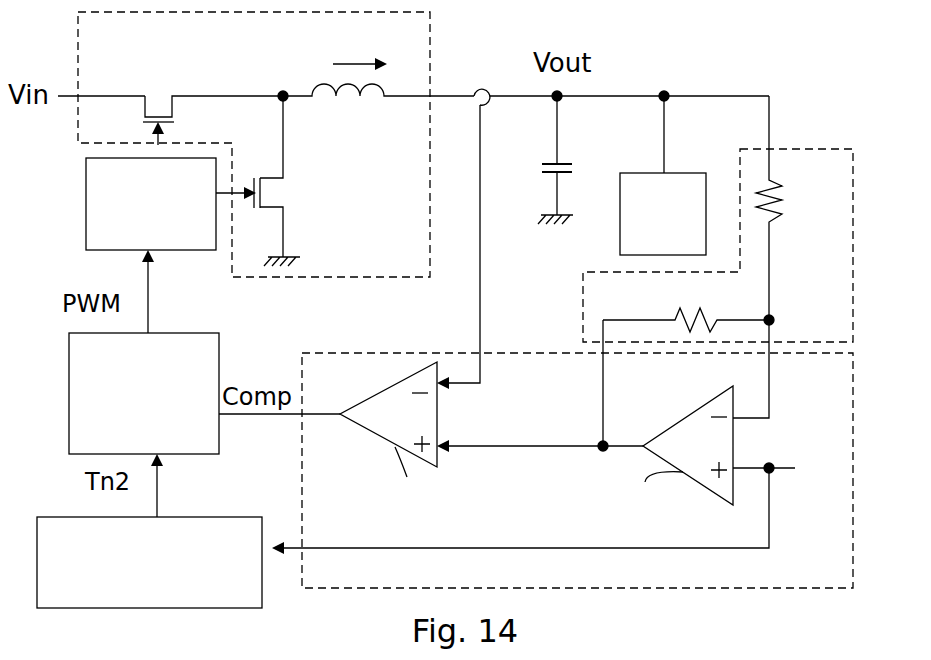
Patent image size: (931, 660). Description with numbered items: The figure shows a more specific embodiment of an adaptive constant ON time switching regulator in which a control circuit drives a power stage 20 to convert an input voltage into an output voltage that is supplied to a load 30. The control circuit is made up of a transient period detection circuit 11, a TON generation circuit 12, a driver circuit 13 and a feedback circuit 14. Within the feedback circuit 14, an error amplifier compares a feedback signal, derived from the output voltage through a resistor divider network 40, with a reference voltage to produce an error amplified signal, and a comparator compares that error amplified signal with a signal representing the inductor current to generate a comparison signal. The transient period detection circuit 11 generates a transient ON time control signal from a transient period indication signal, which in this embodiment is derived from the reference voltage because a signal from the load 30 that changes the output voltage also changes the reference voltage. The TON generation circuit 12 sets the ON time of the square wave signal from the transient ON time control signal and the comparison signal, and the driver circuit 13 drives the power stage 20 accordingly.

The transient period detection circuit 11 is at (137, 602).
The TON generation circuit 12 is at (132, 446).
The driver circuit 13 is at (139, 244).
The feedback circuit 14 is at (833, 573).
The power stage 20 is at (410, 261).
The load 30 is at (650, 245).
The feedback voltage divider 40 is at (845, 331).